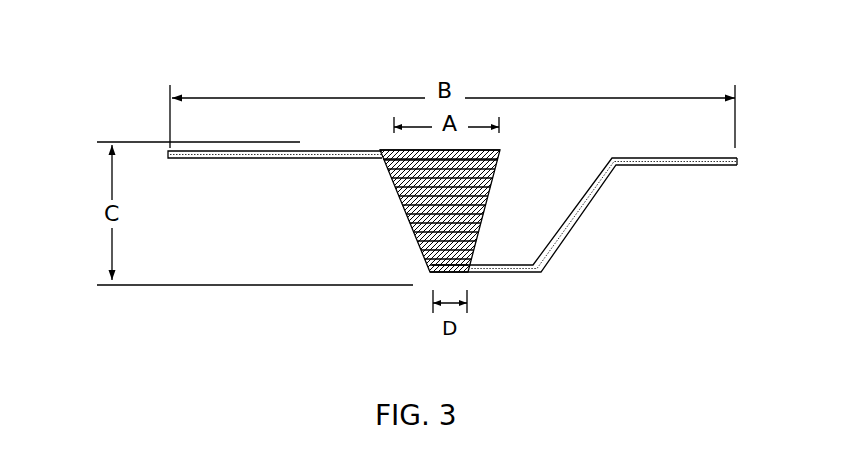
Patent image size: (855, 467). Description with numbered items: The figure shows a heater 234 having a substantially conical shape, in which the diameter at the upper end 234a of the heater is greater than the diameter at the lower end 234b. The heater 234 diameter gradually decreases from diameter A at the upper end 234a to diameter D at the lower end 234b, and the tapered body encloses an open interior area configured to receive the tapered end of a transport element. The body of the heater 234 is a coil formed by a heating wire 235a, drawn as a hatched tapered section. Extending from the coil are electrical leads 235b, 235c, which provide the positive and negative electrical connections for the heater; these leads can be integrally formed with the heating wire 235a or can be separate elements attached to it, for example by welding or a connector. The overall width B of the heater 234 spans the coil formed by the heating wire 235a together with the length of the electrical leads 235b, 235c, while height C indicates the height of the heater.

The heater 234 is at (170, 33).
The upper end 234a is at (509, 148).
The lower end 234b is at (418, 270).
The heating wire 235a is at (400, 192).
The electrical lead 235b is at (290, 160).
The electrical lead 235c is at (698, 170).